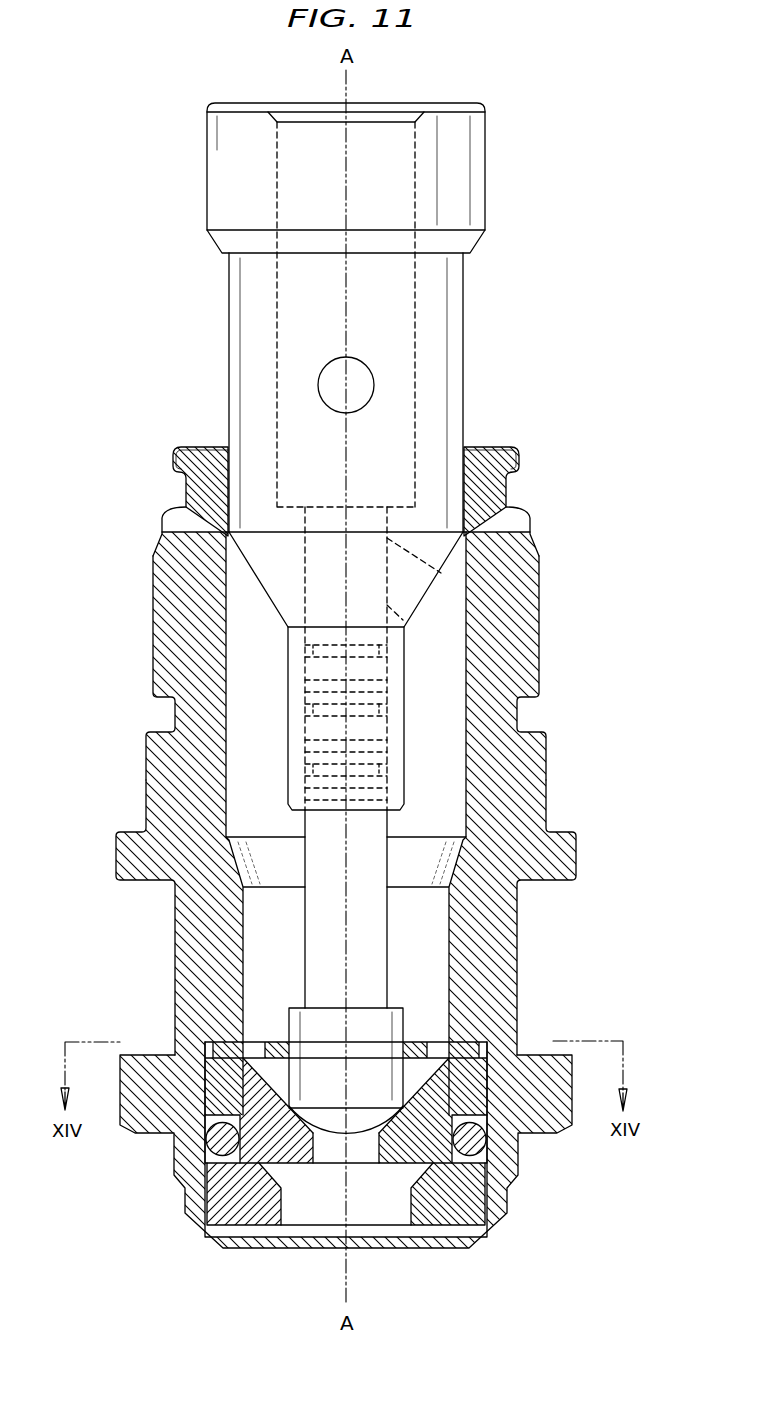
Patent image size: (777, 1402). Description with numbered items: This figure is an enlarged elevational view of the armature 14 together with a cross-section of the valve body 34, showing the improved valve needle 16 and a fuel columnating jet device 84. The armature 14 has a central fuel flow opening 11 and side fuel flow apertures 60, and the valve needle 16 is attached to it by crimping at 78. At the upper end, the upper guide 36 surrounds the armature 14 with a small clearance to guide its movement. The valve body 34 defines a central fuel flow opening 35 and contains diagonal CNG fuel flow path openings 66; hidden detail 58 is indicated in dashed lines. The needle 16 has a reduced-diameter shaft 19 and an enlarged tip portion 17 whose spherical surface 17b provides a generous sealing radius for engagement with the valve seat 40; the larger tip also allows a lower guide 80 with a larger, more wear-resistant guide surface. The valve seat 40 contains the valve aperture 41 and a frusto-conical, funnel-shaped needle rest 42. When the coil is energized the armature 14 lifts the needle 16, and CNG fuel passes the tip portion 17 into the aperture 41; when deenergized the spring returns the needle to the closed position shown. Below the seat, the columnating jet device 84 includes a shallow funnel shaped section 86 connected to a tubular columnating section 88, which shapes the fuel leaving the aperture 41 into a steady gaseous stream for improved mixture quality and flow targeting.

The central fuel flow opening 11 is at (393, 185).
The armature 14 is at (463, 305).
The side fuel flow aperture 60 is at (336, 358).
The upper guide 36 is at (507, 463).
The diagonal CNG fuel flow path openings 66 is at (165, 532).
The valve body 34 is at (532, 603).
The hidden bore 58 is at (406, 583).
The crimp 78 is at (387, 707).
The central fuel flow opening 35 is at (438, 797).
The shaft 19 is at (308, 935).
The valve needle 16 is at (380, 957).
The tip portion 17 is at (300, 1027).
The spherical surface 17b is at (388, 1130).
The lower guide 80 is at (463, 1048).
The needle rest 42 is at (282, 1095).
The valve aperture 41 is at (360, 1150).
The fuel columnating jet device 84 is at (453, 1203).
The valve seat 40 is at (472, 1088).
The funnel shaped section 86 is at (283, 1172).
The columnating section 88 is at (323, 1213).